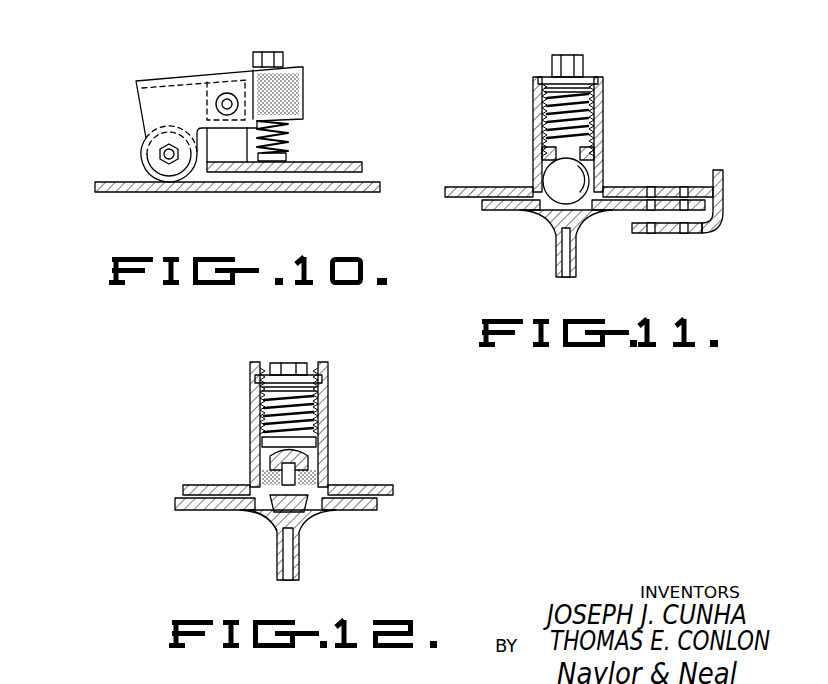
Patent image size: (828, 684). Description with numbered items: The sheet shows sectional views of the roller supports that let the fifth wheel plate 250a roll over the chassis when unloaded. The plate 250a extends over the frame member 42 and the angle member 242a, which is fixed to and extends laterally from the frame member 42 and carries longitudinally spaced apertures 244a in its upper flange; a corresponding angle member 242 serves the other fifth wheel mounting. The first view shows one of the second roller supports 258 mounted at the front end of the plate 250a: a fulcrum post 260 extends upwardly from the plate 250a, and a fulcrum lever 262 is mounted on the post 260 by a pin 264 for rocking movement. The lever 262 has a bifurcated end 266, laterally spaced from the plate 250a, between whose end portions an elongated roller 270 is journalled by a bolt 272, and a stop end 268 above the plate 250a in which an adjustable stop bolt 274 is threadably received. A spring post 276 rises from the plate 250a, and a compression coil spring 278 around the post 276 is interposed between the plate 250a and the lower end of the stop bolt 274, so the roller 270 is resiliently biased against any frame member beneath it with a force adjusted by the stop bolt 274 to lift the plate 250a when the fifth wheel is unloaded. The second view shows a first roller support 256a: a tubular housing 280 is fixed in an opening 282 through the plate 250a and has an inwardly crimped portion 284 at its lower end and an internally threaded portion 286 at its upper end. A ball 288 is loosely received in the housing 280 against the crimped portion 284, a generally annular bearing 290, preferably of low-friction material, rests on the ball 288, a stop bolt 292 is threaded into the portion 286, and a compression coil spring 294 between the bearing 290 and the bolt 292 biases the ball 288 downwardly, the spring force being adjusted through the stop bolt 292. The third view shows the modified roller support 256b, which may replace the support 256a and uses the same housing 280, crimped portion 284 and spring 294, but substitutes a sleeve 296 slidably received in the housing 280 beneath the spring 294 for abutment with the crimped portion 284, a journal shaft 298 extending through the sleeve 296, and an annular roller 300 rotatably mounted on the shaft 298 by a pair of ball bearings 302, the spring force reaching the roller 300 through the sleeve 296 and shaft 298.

In FIG. 10, the second roller support 258 is at (133, 75).
In FIG. 10, the fulcrum lever 262 is at (163, 88).
In FIG. 10, the pin 264 is at (227, 100).
In FIG. 10, the bifurcated end 266 is at (153, 118).
In FIG. 10, the stop end 268 is at (300, 70).
In FIG. 10, the elongated roller 270 is at (150, 172).
In FIG. 10, the bolt 272 is at (168, 158).
In FIG. 10, the adjustable stop bolt 274 is at (280, 52).
In FIG. 10, the spring post 276 is at (284, 147).
In FIG. 10, the compression coil spring 278 is at (288, 119).
In FIG. 10, the fulcrum post 260 is at (225, 155).
In FIG. 10, the plate 250a is at (345, 162).
In FIG. 11, the plate 250a is at (700, 168).
In FIG. 10, the angle member 242 is at (97, 182).
In FIG. 11, the angle member 242a is at (703, 210).
In FIG. 12, the angle member 242a is at (378, 508).
In FIG. 11, the apertures 244a is at (670, 212).
In FIG. 11, the first roller support 256a is at (589, 129).
In FIG. 12, the roller support 256b is at (319, 410).
In FIG. 11, the tubular housing 280 is at (600, 160).
In FIG. 12, the tubular housing 280 is at (328, 433).
In FIG. 11, the opening 282 is at (534, 185).
In FIG. 11, the inwardly crimped portion 284 is at (586, 192).
In FIG. 12, the inwardly crimped portion 284 is at (325, 496).
In FIG. 11, the internally threaded portion 286 is at (600, 84).
In FIG. 12, the internally threaded portion 286 is at (318, 363).
In FIG. 11, the ball 288 is at (596, 178).
In FIG. 11, the bearing 290 is at (598, 150).
In FIG. 11, the stop bolt 292 is at (540, 78).
In FIG. 12, the stop bolt 292 is at (266, 362).
In FIG. 11, the compression coil spring 294 is at (543, 112).
In FIG. 12, the compression coil spring 294 is at (314, 413).
In FIG. 12, the sleeve 296 is at (316, 460).
In FIG. 12, the journal shaft 298 is at (260, 478).
In FIG. 12, the annular roller 300 is at (297, 512).
In FIG. 12, the ball bearings 302 is at (266, 512).
In FIG. 11, the frame member 42 is at (556, 248).